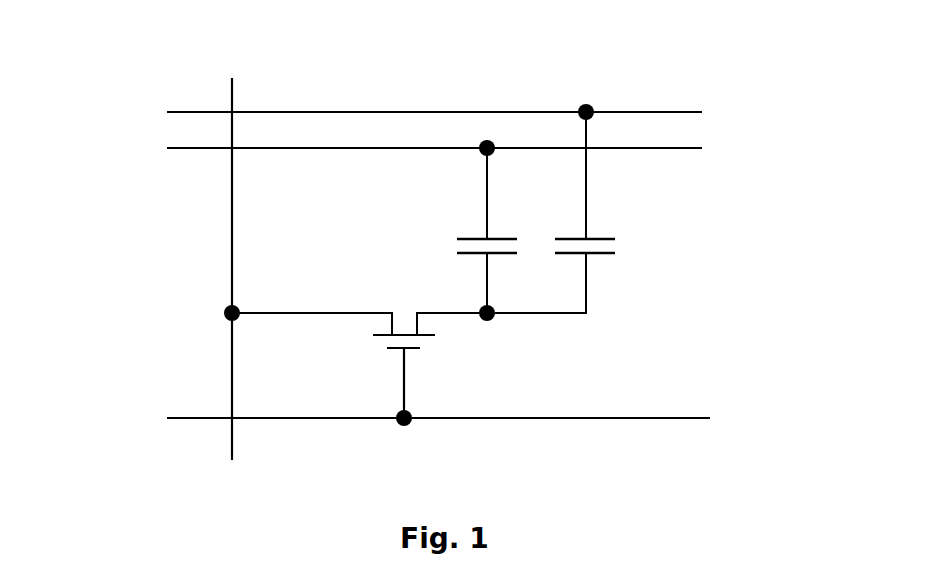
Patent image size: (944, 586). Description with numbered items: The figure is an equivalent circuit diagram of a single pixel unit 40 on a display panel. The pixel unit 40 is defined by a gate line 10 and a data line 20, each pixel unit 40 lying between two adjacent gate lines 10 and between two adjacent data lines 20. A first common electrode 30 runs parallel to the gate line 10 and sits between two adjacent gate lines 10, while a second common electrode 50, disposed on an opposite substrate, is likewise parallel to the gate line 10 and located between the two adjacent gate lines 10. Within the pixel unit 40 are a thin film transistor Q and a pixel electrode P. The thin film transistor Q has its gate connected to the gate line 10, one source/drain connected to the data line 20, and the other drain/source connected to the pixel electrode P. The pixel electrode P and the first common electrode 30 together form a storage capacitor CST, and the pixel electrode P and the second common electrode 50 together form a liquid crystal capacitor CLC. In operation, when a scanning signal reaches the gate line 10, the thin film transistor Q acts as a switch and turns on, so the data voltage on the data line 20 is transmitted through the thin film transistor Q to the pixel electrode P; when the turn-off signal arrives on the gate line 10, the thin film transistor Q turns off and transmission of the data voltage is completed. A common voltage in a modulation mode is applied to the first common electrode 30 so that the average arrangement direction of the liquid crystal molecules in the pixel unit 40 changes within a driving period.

The gate line 10 is at (203, 417).
The data line 20 is at (230, 245).
The first common electrode 30 is at (198, 148).
The pixel unit 40 is at (660, 198).
The second common electrode 50 is at (480, 112).
The thin film transistor Q is at (402, 312).
The storage capacitor CST is at (447, 250).
The liquid crystal capacitor CLC is at (615, 247).
The pixel electrode P is at (540, 313).